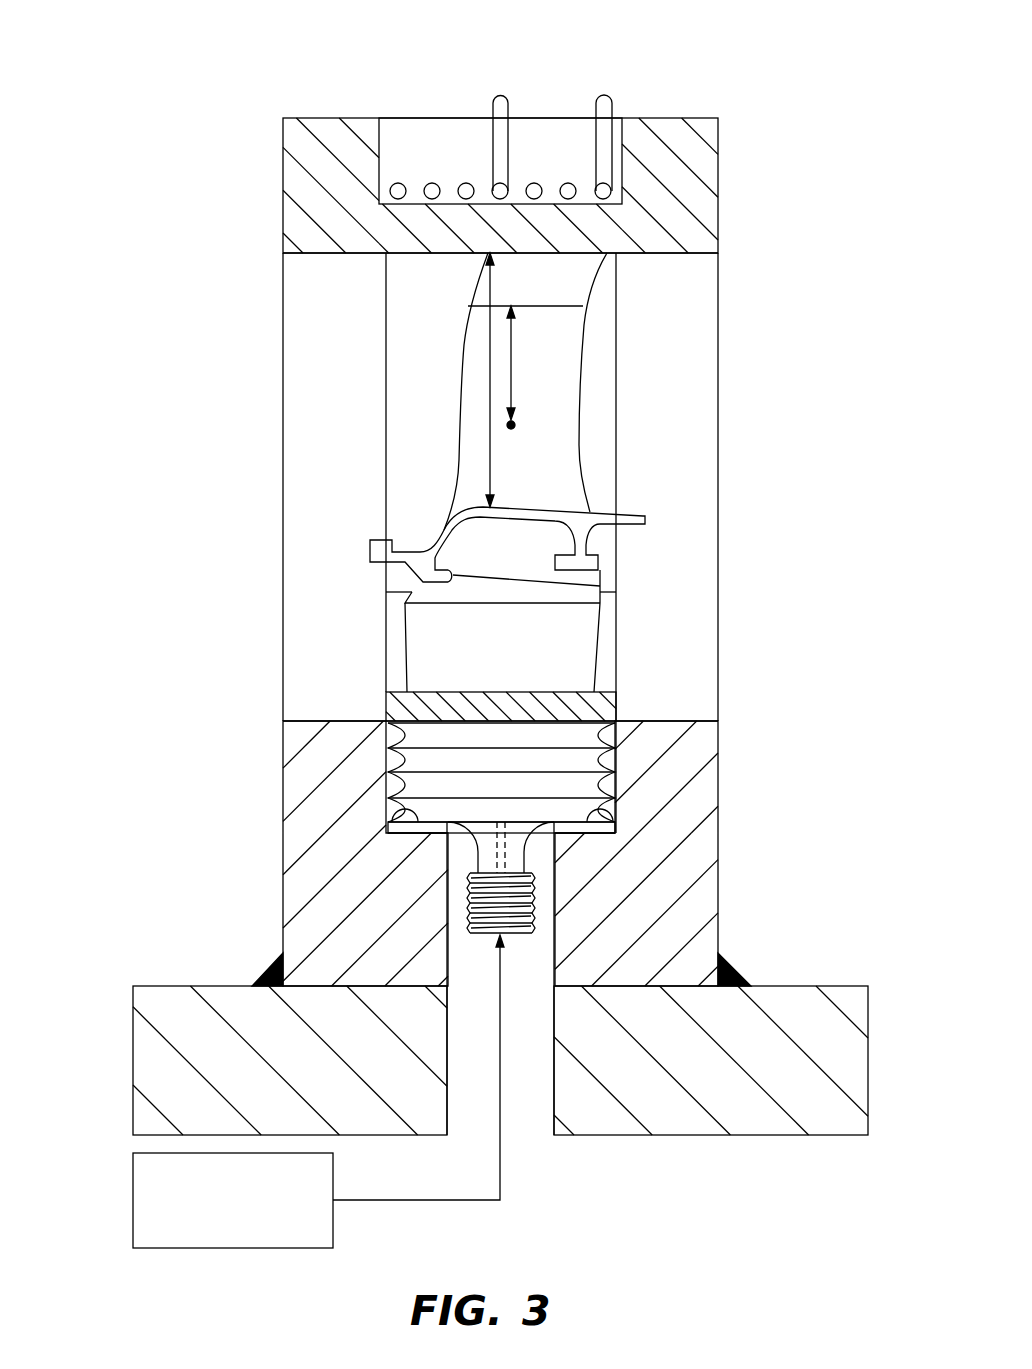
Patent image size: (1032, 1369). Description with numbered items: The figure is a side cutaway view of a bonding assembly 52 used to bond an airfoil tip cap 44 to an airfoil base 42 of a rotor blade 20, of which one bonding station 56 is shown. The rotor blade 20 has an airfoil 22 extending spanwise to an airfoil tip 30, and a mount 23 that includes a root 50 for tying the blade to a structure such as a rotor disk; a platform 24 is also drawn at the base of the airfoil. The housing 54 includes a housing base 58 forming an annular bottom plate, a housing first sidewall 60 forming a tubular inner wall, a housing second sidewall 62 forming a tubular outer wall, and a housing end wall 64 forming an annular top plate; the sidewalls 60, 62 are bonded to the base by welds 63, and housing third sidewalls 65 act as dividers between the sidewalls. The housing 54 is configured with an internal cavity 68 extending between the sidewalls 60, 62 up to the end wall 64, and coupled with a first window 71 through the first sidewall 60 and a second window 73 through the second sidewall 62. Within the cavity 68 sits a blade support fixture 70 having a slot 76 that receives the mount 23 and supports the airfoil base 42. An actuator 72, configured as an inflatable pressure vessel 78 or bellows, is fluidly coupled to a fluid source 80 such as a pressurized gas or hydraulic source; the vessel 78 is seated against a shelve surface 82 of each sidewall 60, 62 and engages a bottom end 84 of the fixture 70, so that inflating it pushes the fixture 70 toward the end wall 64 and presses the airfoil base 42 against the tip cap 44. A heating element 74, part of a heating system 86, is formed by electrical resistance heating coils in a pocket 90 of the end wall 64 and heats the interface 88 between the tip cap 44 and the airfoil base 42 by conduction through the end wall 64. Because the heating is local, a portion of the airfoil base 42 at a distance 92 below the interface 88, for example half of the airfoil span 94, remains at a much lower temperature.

The rotor blade 20 is at (604, 343).
The airfoil 22 is at (594, 405).
The mount 23 is at (614, 627).
The platform 24 is at (647, 516).
The airfoil tip 30 is at (563, 252).
The airfoil base 42 is at (603, 472).
The airfoil tip cap 44 is at (603, 283).
The root 50 is at (443, 630).
The bonding assembly 52 is at (868, 62).
The housing 54 is at (232, 277).
The bonding station 56 is at (427, 100).
The housing base 58 is at (133, 1055).
The housing first sidewall 60 is at (283, 796).
The housing second sidewall 62 is at (718, 800).
The welds 63 is at (262, 980).
The housing end wall 64 is at (668, 117).
The housing third sidewall 65 is at (442, 406).
The internal cavity 68 is at (402, 448).
The blade support fixture 70 is at (385, 649).
The first window 71 is at (329, 566).
The actuator 72 is at (394, 760).
The second window 73 is at (669, 564).
The heating element 74 is at (537, 183).
The slot 76 is at (606, 706).
The inflatable pressure vessel 78 is at (423, 788).
The fluid source 80 is at (133, 1213).
The shelve surface 82 is at (395, 810).
The bottom end 84 is at (563, 723).
The heating system 86 is at (577, 72).
The interface 88 is at (415, 311).
The pocket 90 is at (411, 156).
The distance 92 is at (518, 390).
The airfoil span 94 is at (492, 462).